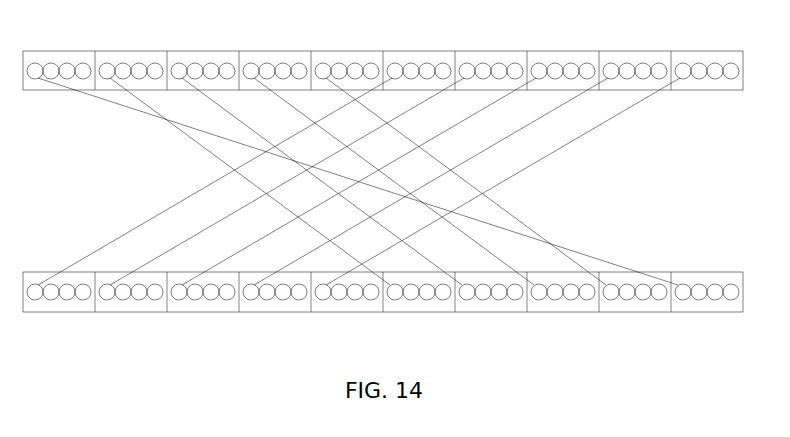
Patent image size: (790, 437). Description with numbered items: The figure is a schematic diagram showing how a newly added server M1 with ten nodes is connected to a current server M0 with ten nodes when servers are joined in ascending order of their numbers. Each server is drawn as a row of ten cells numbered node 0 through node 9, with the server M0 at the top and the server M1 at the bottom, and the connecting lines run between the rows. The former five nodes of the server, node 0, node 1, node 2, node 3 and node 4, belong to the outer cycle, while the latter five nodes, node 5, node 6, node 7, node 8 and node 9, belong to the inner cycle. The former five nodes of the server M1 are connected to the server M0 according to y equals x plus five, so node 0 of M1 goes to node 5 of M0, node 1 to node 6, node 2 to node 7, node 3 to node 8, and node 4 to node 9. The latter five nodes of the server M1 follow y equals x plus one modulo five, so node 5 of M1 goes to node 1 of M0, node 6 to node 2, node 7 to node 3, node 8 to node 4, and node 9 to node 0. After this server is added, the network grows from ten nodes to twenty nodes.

The server M0 is at (383, 90).
The newly added server M1 is at (383, 278).
The node 0 is at (59, 184).
The node 1 is at (129, 184).
The node 2 is at (201, 184).
The node 3 is at (273, 184).
The node 4 is at (345, 184).
The node 5 is at (417, 184).
The node 6 is at (489, 184).
The node 7 is at (561, 184).
The node 8 is at (633, 184).
The node 9 is at (705, 186).